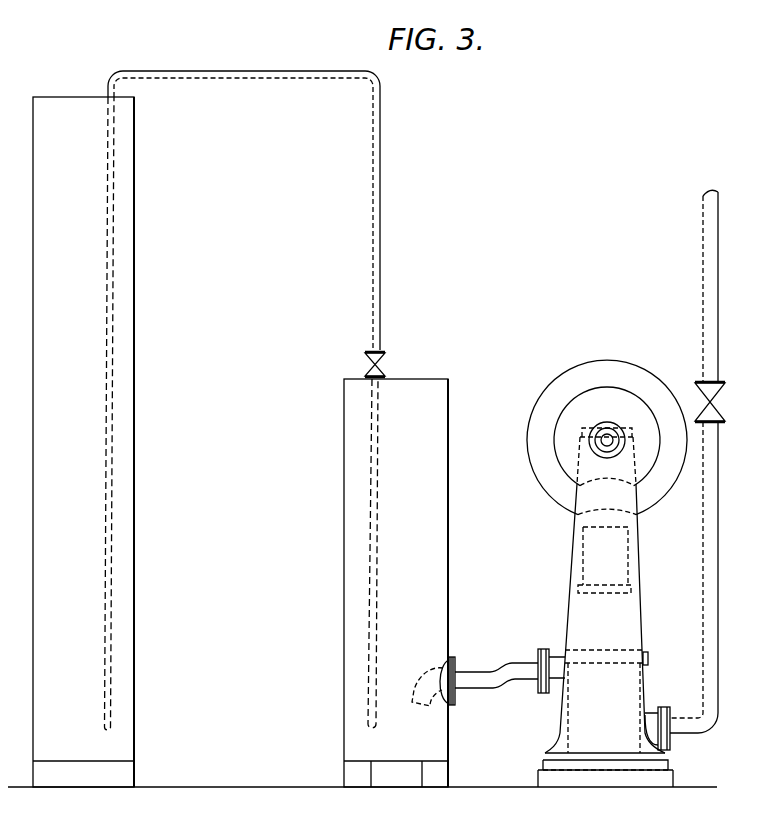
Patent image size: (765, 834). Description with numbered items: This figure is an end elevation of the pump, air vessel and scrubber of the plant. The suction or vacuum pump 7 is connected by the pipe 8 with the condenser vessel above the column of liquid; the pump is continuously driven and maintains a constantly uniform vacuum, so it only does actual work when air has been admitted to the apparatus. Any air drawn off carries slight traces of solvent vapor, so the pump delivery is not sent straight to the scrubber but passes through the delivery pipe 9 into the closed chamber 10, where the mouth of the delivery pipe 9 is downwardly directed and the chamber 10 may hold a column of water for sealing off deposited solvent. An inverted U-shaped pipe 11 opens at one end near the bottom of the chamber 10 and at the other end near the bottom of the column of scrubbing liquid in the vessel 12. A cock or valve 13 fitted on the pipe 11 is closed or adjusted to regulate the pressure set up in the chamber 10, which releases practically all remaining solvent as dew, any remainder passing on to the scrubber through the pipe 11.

The suction or vacuum pump 7 is at (638, 600).
The pipe 8 is at (703, 615).
The delivery pipe 9 is at (482, 678).
The closed chamber 10 is at (447, 596).
The inverted U-shaped pipe 11 is at (368, 563).
The vessel 12 is at (128, 652).
The cock or valve 13 is at (389, 363).